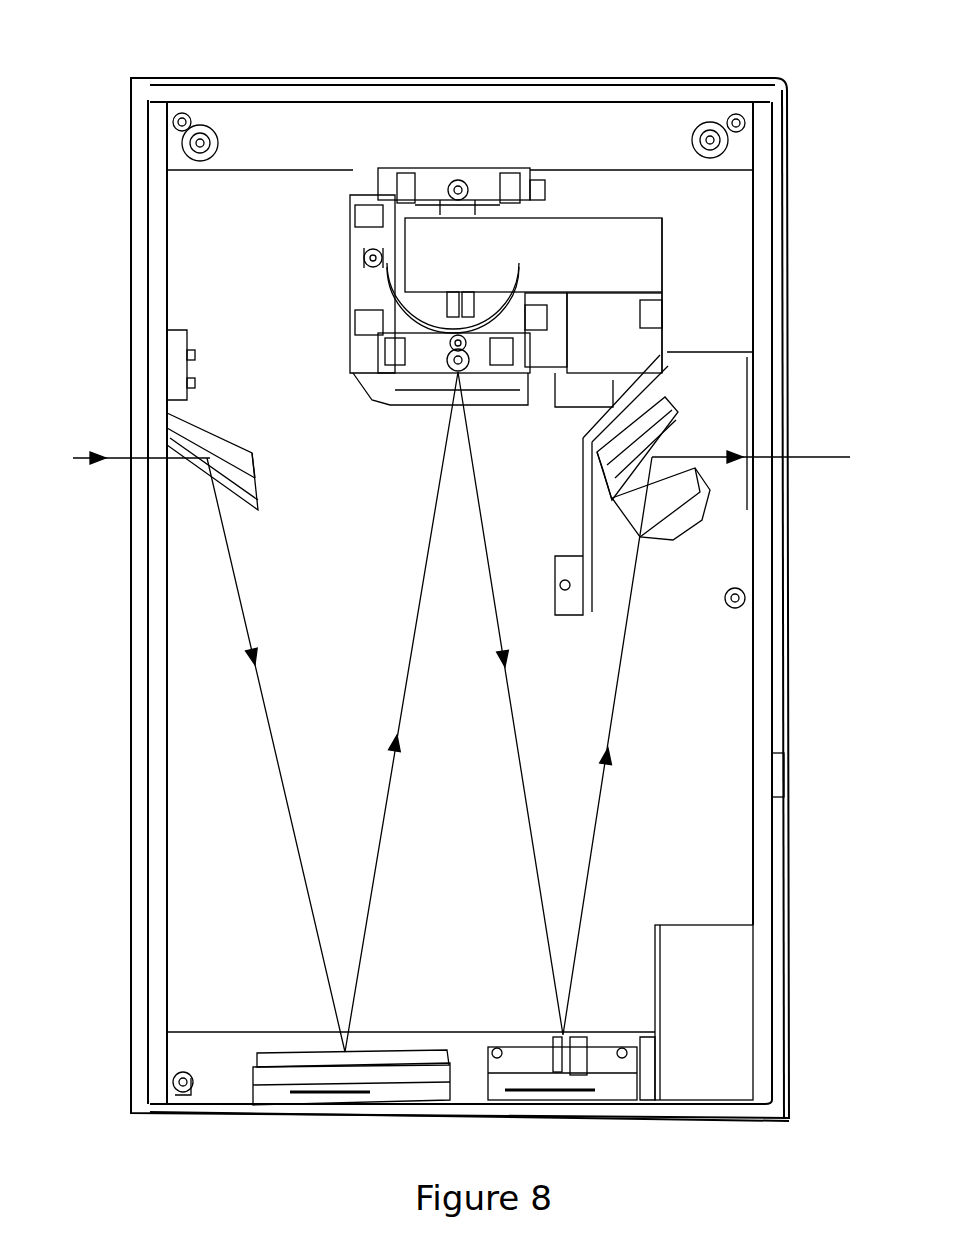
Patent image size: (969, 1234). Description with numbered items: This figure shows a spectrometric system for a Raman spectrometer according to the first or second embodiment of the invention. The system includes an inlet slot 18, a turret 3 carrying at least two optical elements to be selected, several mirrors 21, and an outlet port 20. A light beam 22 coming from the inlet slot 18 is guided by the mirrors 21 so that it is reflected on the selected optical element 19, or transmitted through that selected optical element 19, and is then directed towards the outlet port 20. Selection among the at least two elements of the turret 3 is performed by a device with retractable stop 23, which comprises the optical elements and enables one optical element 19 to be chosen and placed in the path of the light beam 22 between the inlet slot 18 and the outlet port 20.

The turret 3 is at (428, 182).
The inlet slot 18 is at (130, 468).
The optical element 19 is at (389, 402).
The outlet port 20 is at (790, 470).
The mirrors 21 is at (222, 428).
The light beam 22 is at (367, 908).
The device with retractable stop 23 is at (575, 197).